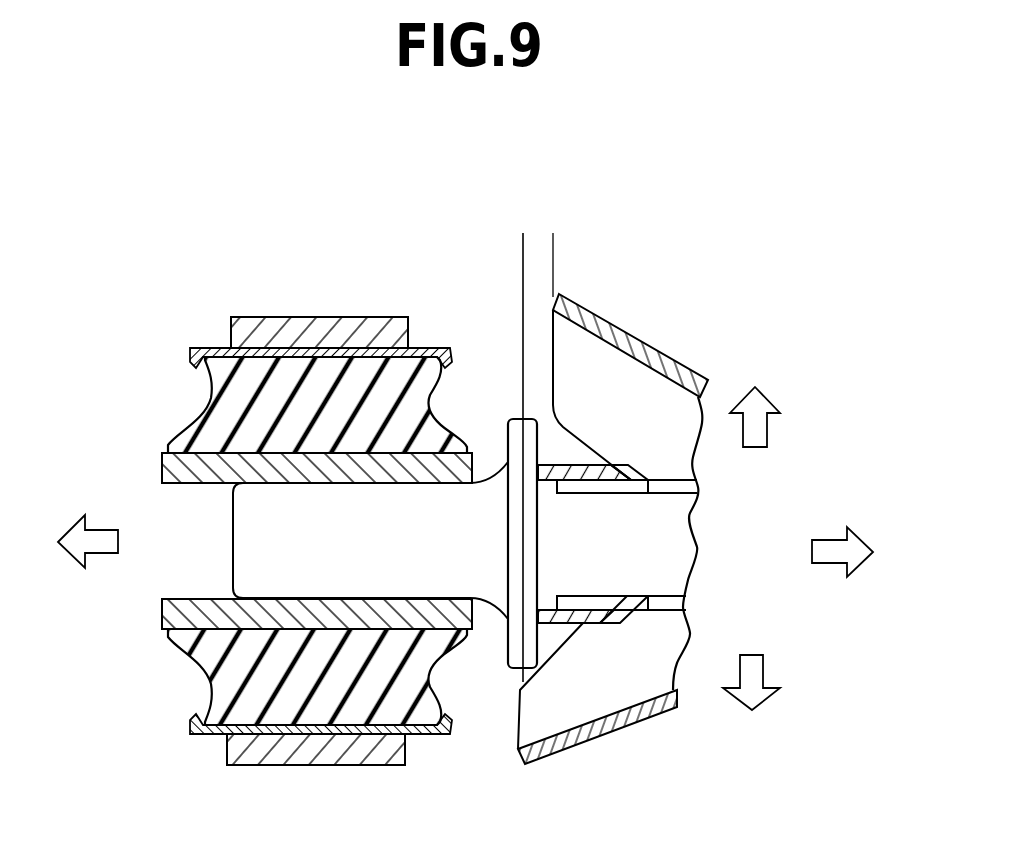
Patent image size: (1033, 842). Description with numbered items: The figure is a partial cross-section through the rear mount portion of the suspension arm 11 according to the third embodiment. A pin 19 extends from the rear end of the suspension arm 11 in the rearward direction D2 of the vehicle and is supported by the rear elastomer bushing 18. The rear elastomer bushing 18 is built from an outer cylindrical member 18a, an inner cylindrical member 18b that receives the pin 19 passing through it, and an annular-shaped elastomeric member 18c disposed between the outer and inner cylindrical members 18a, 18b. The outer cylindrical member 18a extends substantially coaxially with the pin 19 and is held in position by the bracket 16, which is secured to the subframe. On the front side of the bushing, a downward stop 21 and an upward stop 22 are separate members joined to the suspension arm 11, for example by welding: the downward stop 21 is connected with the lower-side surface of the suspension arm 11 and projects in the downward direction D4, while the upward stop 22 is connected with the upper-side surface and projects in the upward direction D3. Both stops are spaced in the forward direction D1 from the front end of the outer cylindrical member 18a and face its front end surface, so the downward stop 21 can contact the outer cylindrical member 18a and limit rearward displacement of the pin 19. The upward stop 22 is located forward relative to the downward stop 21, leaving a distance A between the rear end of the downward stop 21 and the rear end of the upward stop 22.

The suspension arm 11 is at (690, 488).
The bracket 16 is at (260, 330).
The rear elastomer bushing 18 is at (192, 340).
The outer cylindrical member 18a is at (222, 343).
The inner cylindrical member 18b is at (173, 468).
The annular-shaped elastomeric member 18c is at (220, 402).
The pin 19 is at (248, 543).
The downward stop 21 is at (633, 730).
The upward stop 22 is at (600, 317).
The distance A is at (587, 245).
The forward direction D1 is at (830, 543).
The rearward direction D2 is at (93, 558).
The upward direction D3 is at (757, 427).
The downward direction D4 is at (755, 673).